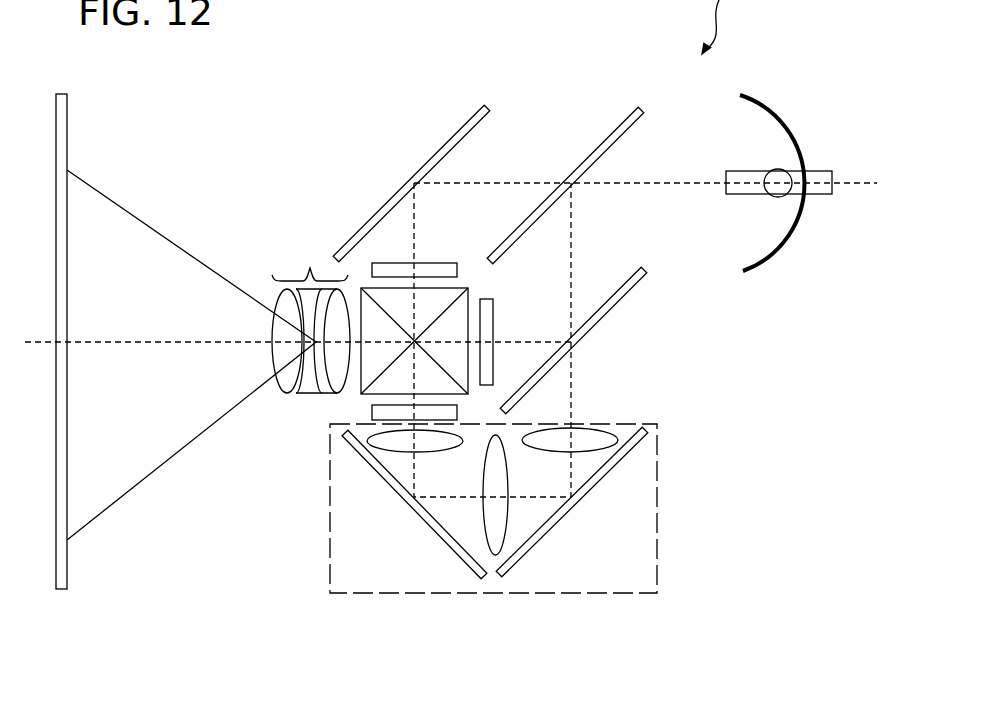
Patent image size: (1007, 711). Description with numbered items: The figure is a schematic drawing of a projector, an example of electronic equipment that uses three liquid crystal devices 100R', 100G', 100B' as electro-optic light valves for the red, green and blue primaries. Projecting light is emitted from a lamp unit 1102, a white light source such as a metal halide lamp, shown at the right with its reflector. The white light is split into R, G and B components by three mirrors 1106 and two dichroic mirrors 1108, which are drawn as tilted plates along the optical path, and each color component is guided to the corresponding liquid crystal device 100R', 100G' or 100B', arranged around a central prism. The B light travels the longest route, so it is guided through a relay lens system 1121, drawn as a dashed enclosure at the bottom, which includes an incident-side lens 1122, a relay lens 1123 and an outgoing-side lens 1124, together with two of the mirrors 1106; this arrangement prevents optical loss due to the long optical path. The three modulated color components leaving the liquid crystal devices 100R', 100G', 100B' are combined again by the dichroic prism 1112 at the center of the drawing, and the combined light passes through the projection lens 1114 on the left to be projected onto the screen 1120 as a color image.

The lamp unit 1102 is at (785, 245).
The mirror 1106 is at (445, 143).
The dichroic mirror 1108 is at (607, 140).
The dichroic prism 1112 is at (370, 307).
The projection lens 1114 is at (310, 267).
The screen 1120 is at (62, 123).
The relay lens system 1121 is at (658, 553).
The incident-side lens 1122 is at (607, 428).
The relay lens 1123 is at (502, 518).
The outgoing-side lens 1124 is at (390, 452).
The liquid crystal device 100R' is at (429, 237).
The liquid crystal device 100G' is at (524, 321).
The liquid crystal device 100B' is at (353, 420).